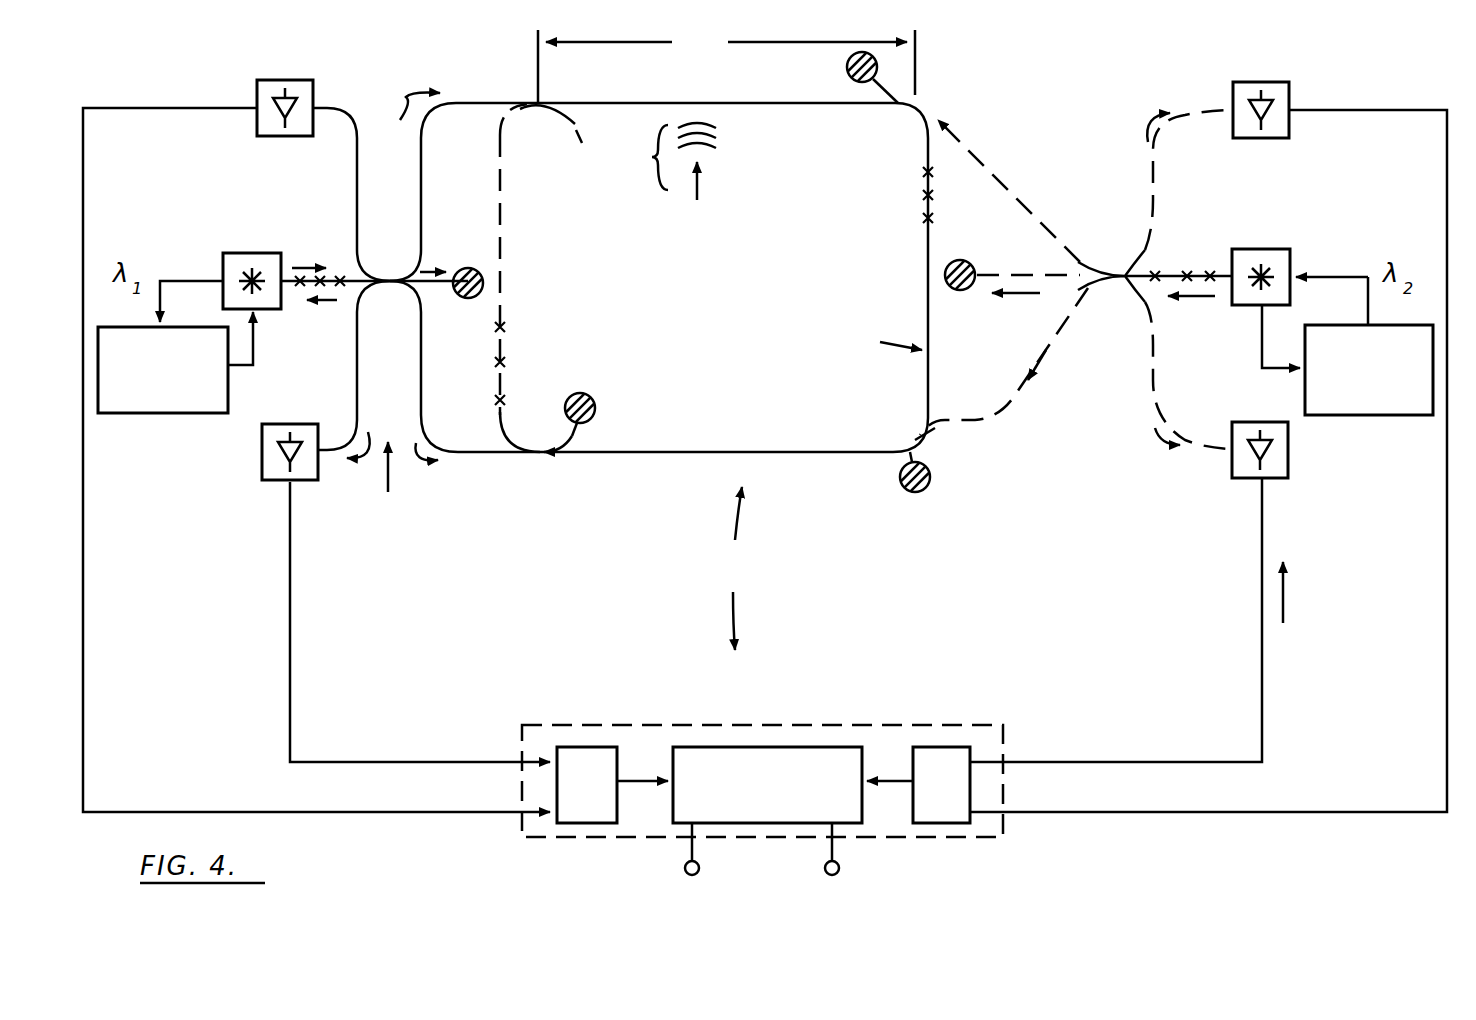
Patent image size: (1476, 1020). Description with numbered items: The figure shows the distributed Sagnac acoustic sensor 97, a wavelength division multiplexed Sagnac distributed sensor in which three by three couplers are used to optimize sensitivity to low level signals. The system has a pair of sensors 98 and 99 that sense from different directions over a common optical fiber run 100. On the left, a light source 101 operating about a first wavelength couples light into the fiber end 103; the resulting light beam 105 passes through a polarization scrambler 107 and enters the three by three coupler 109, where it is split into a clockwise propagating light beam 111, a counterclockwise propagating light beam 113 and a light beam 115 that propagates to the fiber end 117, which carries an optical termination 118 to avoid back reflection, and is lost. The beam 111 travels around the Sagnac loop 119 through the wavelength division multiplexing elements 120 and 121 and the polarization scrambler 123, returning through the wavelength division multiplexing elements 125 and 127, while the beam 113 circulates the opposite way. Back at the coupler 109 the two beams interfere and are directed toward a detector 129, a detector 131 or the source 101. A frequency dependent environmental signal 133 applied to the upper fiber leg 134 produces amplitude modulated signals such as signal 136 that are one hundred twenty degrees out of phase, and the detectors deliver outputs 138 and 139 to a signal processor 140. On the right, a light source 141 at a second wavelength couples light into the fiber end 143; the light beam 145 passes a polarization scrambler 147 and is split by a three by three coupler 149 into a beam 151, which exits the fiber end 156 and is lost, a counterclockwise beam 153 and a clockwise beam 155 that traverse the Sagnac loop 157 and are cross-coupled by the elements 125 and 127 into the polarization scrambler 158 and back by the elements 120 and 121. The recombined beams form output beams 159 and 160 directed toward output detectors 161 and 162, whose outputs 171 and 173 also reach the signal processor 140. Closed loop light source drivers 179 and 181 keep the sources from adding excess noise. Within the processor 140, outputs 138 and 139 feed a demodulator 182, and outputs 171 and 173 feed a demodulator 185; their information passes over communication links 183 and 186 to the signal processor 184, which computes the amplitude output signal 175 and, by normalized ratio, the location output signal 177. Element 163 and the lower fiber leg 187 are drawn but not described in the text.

The distributed Sagnac acoustic sensor 97 is at (733, 568).
The sensor 98 is at (385, 484).
The sensor 99 is at (1285, 603).
The common optical fiber run 100 is at (726, 66).
The light source 101 is at (243, 253).
The fiber end 103 is at (283, 318).
The light beam 105 is at (305, 266).
The polarization scrambler 107 is at (342, 262).
The 3 by 3 coupler 109 is at (391, 268).
The clockwise propagating light beam 111 is at (407, 96).
The counterclockwise propagating light beam 113 is at (447, 476).
The light beam 115 is at (430, 272).
The fiber end 117 is at (462, 298).
The optical termination 118 is at (482, 270).
The Sagnac loop 119 is at (878, 343).
The wavelength division multiplexing element 120 is at (540, 105).
The wavelength division multiplexing element 121 is at (905, 118).
The polarization scrambler 123 is at (920, 186).
The wavelength division multiplexing element 125 is at (920, 438).
The wavelength division multiplexing element 127 is at (540, 455).
The detector 129 is at (262, 480).
The detector 131 is at (268, 137).
The frequency dependent environmental signal 133 is at (664, 161).
The upper fiber leg 134 is at (779, 108).
The amplitude modulated signal 136 is at (320, 302).
The output 138 is at (388, 762).
The output 139 is at (365, 812).
The signal processor 140 is at (848, 725).
The light source 141 is at (1242, 310).
The fiber end 143 is at (1238, 262).
The light beam 145 is at (1178, 300).
The polarization scrambler 147 is at (1170, 268).
The 3 by 3 coupler 149 is at (1102, 268).
The light beam 151 is at (1012, 300).
The counterclockwise beam 153 is at (975, 152).
The clockwise beam 155 is at (1045, 368).
The fiber end 156 is at (975, 240).
The Sagnac loop 157 is at (502, 222).
The polarization scrambler 158 is at (500, 356).
The output beam 159 is at (1185, 162).
The output beam 160 is at (1150, 442).
The output detector 161 is at (1278, 84).
The output detector 162 is at (1290, 460).
The light source lead 163 is at (1283, 250).
The output 171 is at (1072, 762).
The output 173 is at (1070, 812).
The amplitude output signal 175 is at (690, 848).
The location output signal 177 is at (836, 848).
The closed loop light source driver 179 is at (140, 414).
The closed loop light source driver 181 is at (1392, 415).
The demodulator 182 is at (578, 747).
The communication link 183 is at (635, 778).
The wavelength division multiplexed Sagnac distributed sensor signal processor 184 is at (750, 747).
The demodulator 185 is at (945, 747).
The communication link 186 is at (893, 780).
The sensing fiber loop 187 is at (805, 453).